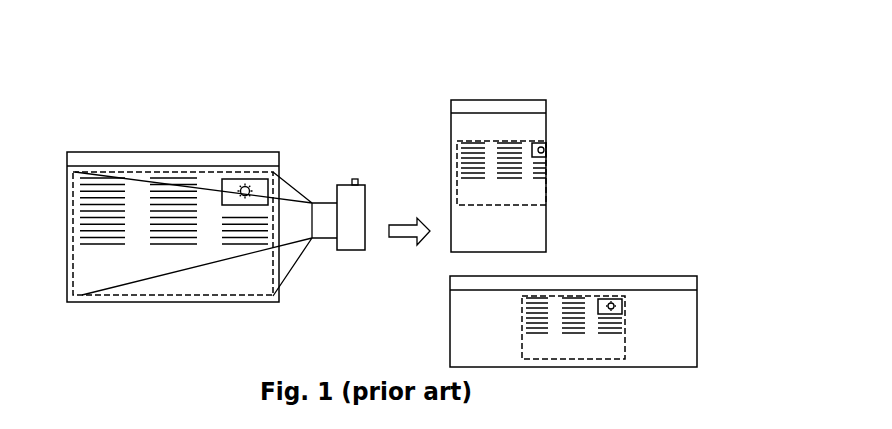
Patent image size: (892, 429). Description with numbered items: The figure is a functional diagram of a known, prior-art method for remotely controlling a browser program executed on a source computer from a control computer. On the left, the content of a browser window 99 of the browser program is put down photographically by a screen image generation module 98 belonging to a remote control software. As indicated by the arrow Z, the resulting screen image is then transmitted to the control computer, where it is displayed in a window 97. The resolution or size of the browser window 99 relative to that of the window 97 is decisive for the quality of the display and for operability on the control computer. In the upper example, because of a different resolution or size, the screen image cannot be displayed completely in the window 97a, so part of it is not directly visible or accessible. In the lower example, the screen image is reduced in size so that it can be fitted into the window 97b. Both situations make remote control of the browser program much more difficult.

The browser window 99 is at (155, 160).
The screen image generation module 98 is at (348, 198).
The arrow Z is at (412, 230).
The window 97 is at (616, 191).
The window 97a is at (482, 122).
The window 97b is at (670, 280).